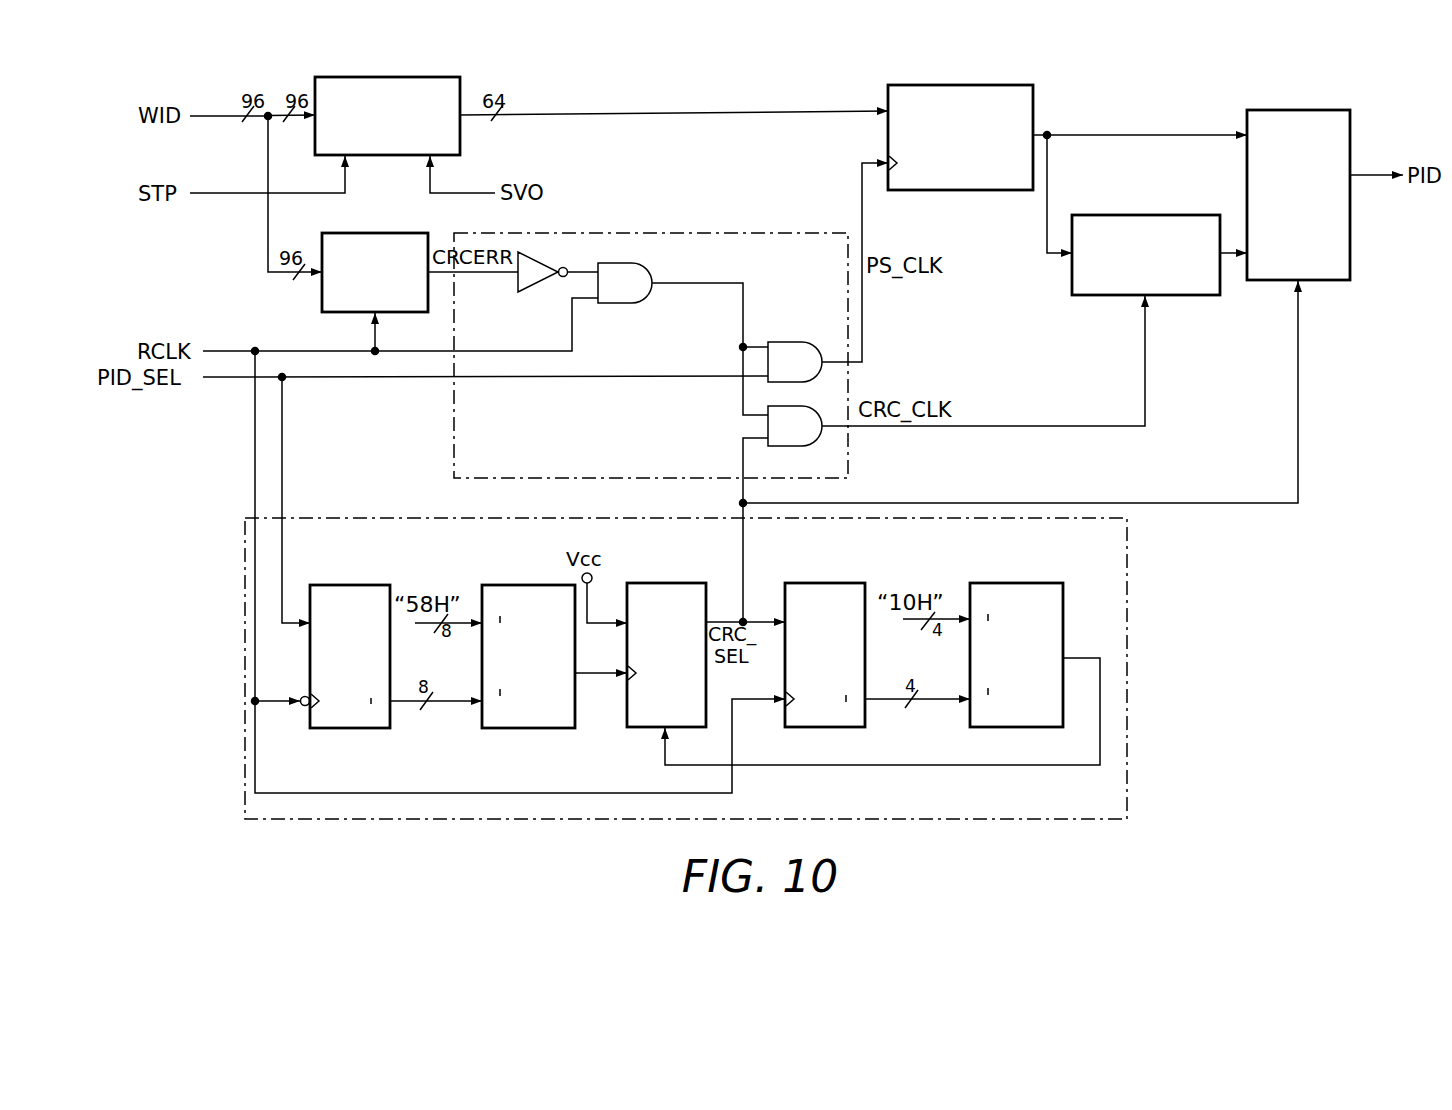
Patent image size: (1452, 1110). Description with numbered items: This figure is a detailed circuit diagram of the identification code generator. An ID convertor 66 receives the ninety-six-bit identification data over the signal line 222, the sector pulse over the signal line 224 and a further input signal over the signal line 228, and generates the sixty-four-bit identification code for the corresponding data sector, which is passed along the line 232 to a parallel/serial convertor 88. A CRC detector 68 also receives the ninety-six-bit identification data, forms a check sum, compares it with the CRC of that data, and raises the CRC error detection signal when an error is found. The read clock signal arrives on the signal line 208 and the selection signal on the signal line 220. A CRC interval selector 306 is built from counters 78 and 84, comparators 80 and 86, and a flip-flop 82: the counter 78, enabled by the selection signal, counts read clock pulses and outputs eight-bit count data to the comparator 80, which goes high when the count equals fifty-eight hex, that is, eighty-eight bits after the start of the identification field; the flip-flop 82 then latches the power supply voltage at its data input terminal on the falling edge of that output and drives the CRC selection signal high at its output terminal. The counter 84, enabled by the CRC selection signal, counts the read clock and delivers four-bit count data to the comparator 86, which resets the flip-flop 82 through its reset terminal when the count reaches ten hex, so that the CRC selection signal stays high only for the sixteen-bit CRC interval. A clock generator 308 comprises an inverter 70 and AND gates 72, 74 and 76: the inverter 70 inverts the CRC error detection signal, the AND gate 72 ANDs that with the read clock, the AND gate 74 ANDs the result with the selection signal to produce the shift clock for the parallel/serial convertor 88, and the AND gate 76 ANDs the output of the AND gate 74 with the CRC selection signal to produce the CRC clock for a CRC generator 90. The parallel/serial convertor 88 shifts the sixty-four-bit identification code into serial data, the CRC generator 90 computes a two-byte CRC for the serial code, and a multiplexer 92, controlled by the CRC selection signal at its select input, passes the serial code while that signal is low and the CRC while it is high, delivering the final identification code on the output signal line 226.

The ID convertor 66 is at (388, 76).
The CRC detector 68 is at (375, 232).
The inverter 70 is at (542, 286).
The AND gate 72 is at (628, 300).
The AND gate 74 is at (802, 341).
The AND gate 76 is at (794, 447).
The counter 78 is at (349, 584).
The comparator 80 is at (528, 584).
The flip-flop 82 is at (666, 582).
The counter 84 is at (827, 582).
The comparator 86 is at (1016, 582).
The parallel/serial convertor 88 is at (959, 84).
The CRC generator 90 is at (1146, 214).
The multiplexer 92 is at (1299, 109).
The signal line 208 is at (228, 350).
The signal line 220 is at (229, 380).
The signal line 222 is at (213, 114).
The signal line 224 is at (213, 192).
The signal line 226 is at (1377, 174).
The signal line 228 is at (492, 192).
The ID converter output line 232 is at (531, 112).
The CRC interval selector 306 is at (245, 664).
The clock generator 308 is at (651, 232).